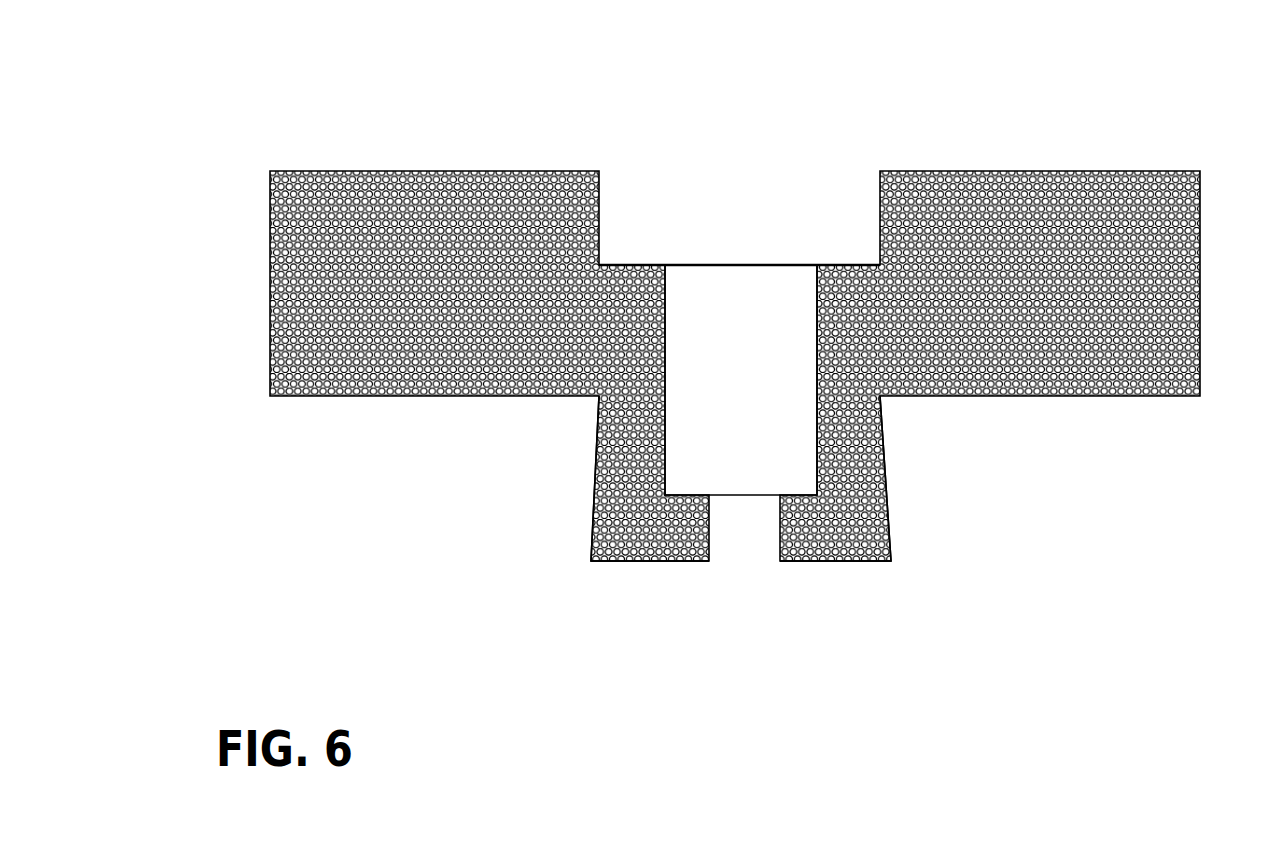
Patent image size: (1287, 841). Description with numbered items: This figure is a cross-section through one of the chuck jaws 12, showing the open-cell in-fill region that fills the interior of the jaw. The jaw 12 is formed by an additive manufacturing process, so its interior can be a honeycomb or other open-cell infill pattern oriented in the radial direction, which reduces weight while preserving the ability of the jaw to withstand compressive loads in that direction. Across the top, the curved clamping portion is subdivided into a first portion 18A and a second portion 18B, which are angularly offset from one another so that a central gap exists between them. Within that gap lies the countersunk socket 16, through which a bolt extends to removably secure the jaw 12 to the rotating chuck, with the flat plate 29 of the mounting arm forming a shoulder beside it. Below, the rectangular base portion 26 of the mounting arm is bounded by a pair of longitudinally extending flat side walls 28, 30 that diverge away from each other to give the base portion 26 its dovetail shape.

The chuck jaw 12 is at (735, 334).
The first portion 18A is at (378, 163).
The second portion 18B is at (1045, 163).
The countersunk socket 16 is at (657, 295).
The plate 29 is at (838, 257).
The flat side wall 30 is at (585, 478).
The flat side wall 28 is at (883, 503).
The base portion 26 is at (824, 555).